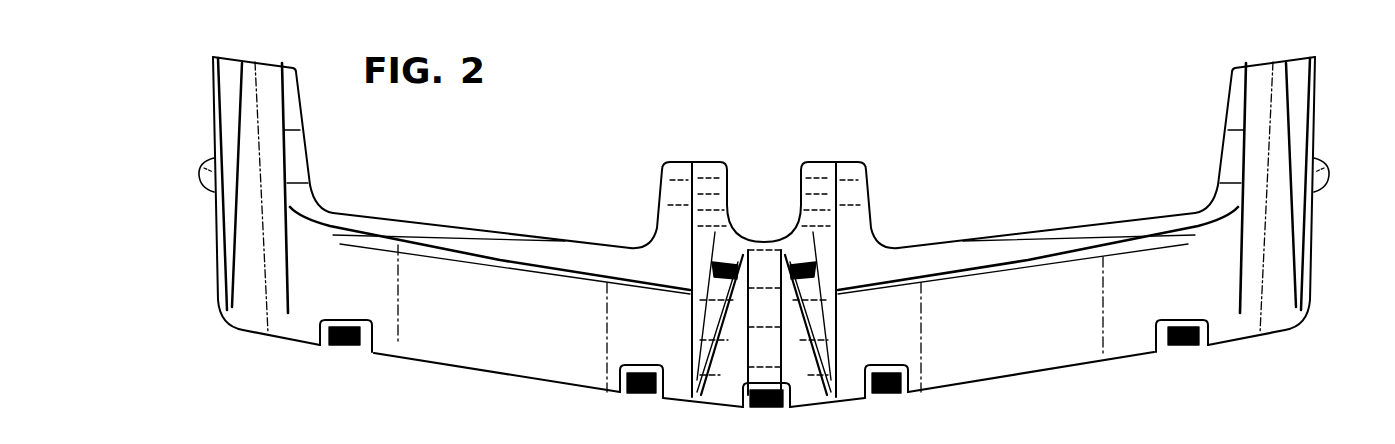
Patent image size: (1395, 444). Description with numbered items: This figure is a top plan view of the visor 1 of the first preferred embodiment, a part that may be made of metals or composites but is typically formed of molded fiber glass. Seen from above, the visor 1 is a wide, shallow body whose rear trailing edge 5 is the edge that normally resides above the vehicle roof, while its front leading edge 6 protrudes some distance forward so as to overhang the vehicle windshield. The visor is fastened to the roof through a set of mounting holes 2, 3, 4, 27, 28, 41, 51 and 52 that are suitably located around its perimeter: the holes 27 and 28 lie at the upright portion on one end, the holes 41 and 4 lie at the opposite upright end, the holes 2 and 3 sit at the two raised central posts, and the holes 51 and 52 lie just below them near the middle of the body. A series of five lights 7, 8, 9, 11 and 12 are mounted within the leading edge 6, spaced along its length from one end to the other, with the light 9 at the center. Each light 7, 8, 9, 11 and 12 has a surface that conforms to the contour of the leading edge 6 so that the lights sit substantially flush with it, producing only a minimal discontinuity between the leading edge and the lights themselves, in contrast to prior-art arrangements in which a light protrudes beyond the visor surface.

The visor 1 is at (778, 125).
The mounting hole 2 is at (703, 180).
The mounting hole 3 is at (827, 180).
The mounting hole 4 is at (1321, 164).
The trailing edge 5 is at (1005, 237).
The leading edge 6 is at (1050, 369).
The light 7 is at (348, 352).
The light 8 is at (643, 398).
The light 9 is at (775, 410).
The light 11 is at (885, 398).
The light 12 is at (1183, 347).
The mounting hole 27 is at (208, 166).
The mounting hole 28 is at (248, 80).
The mounting hole 41 is at (1277, 80).
The mounting hole 51 is at (717, 263).
The mounting hole 52 is at (820, 272).